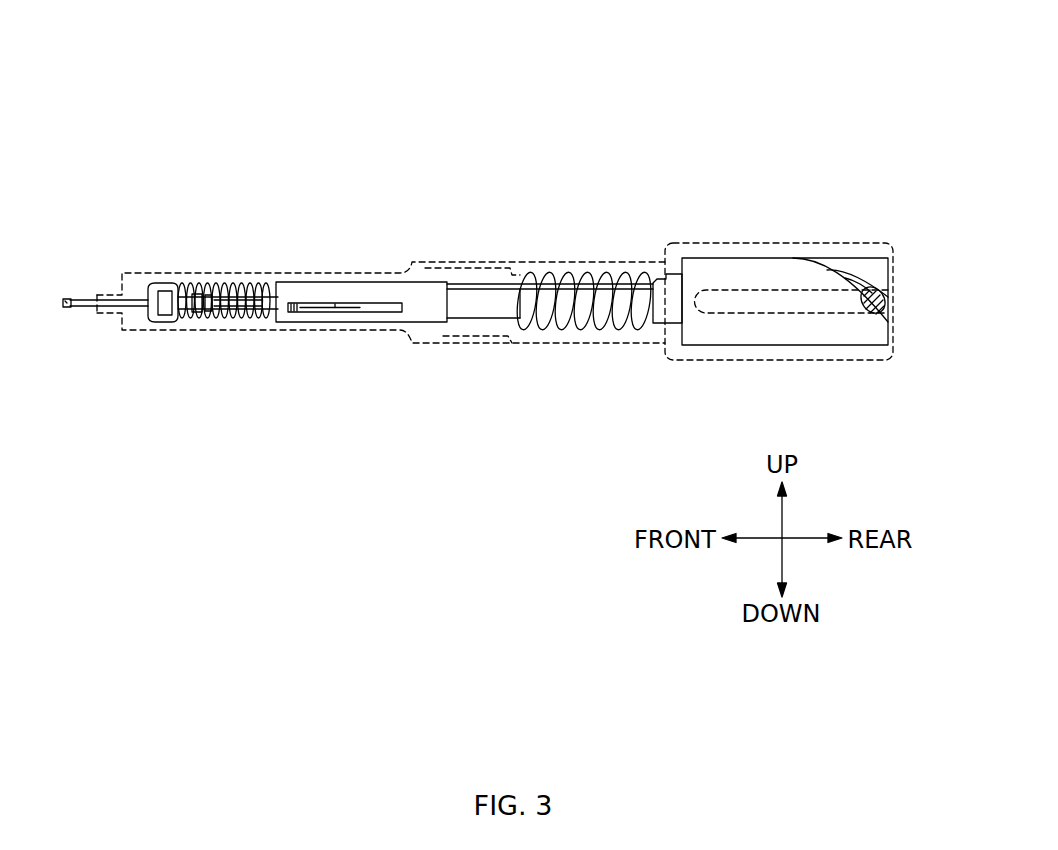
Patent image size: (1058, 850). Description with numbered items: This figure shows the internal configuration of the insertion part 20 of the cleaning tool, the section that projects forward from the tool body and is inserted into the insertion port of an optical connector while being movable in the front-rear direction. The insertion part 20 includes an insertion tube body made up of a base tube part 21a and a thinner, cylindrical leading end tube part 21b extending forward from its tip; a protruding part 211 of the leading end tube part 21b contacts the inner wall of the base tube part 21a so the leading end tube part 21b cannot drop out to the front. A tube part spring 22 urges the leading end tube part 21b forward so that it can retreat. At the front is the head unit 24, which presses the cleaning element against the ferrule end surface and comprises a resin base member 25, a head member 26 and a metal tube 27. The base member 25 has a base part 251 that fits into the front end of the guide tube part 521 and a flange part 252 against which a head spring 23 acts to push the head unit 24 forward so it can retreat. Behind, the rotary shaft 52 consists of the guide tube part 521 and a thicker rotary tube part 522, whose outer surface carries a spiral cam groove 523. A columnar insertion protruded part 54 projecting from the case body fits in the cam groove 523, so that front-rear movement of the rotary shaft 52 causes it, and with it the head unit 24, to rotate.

The insertion part 20 is at (332, 125).
The base tube part 21a is at (528, 346).
The leading end tube part 21b is at (343, 331).
The protruding part 211 is at (473, 344).
The tube part spring 22 is at (593, 330).
The head spring 23 is at (226, 283).
The head unit 24 is at (130, 332).
The base member 25 is at (206, 362).
The base part 251 is at (193, 316).
The flange part 252 is at (163, 323).
The head member 26 is at (67, 308).
The metal tube 27 is at (80, 299).
The rotary shaft 52 is at (644, 248).
The guide tube part 521 is at (427, 290).
The rotary tube part 522 is at (770, 271).
The cam groove 523 is at (779, 308).
The insertion protruded part 54 is at (880, 312).